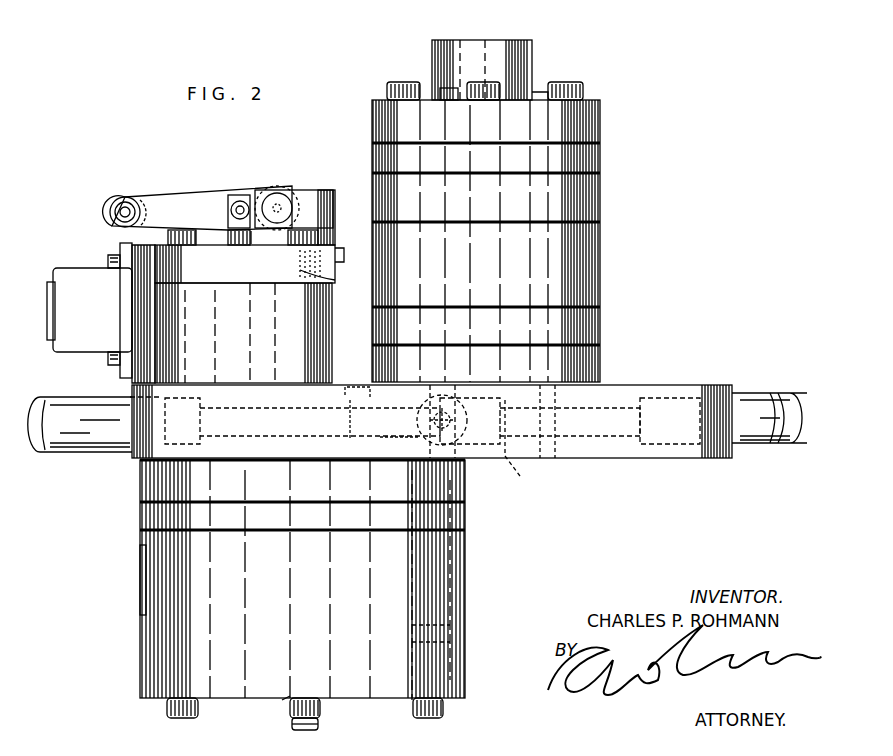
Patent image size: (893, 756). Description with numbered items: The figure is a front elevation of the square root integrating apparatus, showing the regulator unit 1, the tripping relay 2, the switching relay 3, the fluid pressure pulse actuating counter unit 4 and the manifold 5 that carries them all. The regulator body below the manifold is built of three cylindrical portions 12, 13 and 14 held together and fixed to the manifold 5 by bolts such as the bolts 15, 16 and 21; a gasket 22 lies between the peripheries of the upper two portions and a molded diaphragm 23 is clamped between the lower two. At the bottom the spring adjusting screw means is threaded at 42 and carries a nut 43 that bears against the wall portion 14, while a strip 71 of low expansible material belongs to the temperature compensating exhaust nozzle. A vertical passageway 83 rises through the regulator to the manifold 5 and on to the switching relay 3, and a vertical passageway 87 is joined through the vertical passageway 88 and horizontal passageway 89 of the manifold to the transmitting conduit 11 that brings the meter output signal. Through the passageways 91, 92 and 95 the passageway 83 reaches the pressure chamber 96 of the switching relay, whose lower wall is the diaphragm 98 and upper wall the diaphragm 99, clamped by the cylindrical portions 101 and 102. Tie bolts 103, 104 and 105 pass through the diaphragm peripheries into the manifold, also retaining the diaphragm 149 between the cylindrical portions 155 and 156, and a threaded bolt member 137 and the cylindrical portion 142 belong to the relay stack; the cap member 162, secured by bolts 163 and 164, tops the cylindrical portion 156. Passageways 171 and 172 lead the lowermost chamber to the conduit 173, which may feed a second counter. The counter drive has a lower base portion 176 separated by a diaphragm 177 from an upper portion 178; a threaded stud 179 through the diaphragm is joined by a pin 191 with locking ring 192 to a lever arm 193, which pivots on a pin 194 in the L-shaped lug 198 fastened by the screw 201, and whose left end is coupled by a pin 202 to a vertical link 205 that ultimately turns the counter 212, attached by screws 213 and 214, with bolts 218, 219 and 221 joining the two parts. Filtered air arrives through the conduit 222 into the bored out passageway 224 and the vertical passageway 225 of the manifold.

The regulator unit 1 is at (135, 628).
The tripping relay 2 is at (612, 137).
The switching relay 3 is at (616, 301).
The fluid pressure pulse actuating counter unit 4 is at (120, 192).
The manifold 5 is at (698, 372).
The transmitting conduit 11 is at (748, 405).
The cylindrical portion 12 is at (160, 481).
The cylindrical portion 13 is at (164, 516).
The cylindrical portion 14 is at (160, 663).
The bolt 15 is at (290, 709).
The bolt 16 is at (166, 709).
The bolt 21 is at (441, 709).
The gasket 22 is at (278, 500).
The molded diaphragm 23 is at (278, 530).
The threaded lower portion of screw means 42 is at (318, 722).
The nut 43 is at (322, 706).
The strip of low expansible material 71 is at (140, 569).
The vertical passageway 83 is at (456, 580).
The vertical passageway 87 is at (465, 481).
The vertical passageway 88 is at (430, 444).
The horizontal passageway 89 is at (521, 445).
The passageway 91 is at (456, 444).
The passageway 92 is at (455, 419).
The passageway 95 is at (452, 396).
The pressure chamber 96 is at (584, 328).
The diaphragm 98 is at (476, 344).
The diaphragm 99 is at (476, 306).
The cylindrical portion 101 is at (578, 356).
The cylindrical portion 102 is at (584, 254).
The tie bolt 103 is at (570, 88).
The tie bolt 104 is at (484, 90).
The tie bolt 105 is at (406, 86).
The threaded bolt member 137 is at (477, 172).
The cylindrical portion 142 is at (584, 194).
The diaphragm 149 is at (477, 142).
The cylindrical portion 155 is at (584, 156).
The cylindrical portion 156 is at (584, 118).
The cap member 162 is at (473, 50).
The connecting bolt 163 is at (540, 88).
The bolt 164 is at (446, 88).
The passageway 171 is at (367, 388).
The passageway 172 is at (281, 417).
The conduit 173 is at (85, 452).
The lower base portion 176 is at (312, 326).
The diaphragm 177 is at (260, 282).
The upper portion 178 is at (335, 280).
The threaded stud 179 is at (243, 196).
The pin 191 is at (238, 200).
The locking ring 192 is at (244, 206).
The lever arm 193 is at (196, 192).
The pin 194 is at (277, 198).
The L-shaped lug 198 is at (322, 190).
The screw 201 is at (340, 256).
The pin 202 is at (127, 198).
The vertical link 205 is at (120, 218).
The counter 212 is at (82, 270).
The screw 213 is at (112, 364).
The screw 214 is at (112, 258).
The bolt 218 is at (305, 228).
The bolt 219 is at (229, 238).
The bolt 221 is at (182, 232).
The conduit 222 is at (785, 400).
The bored out passageway 224 is at (623, 405).
The vertical passageway 225 is at (540, 396).